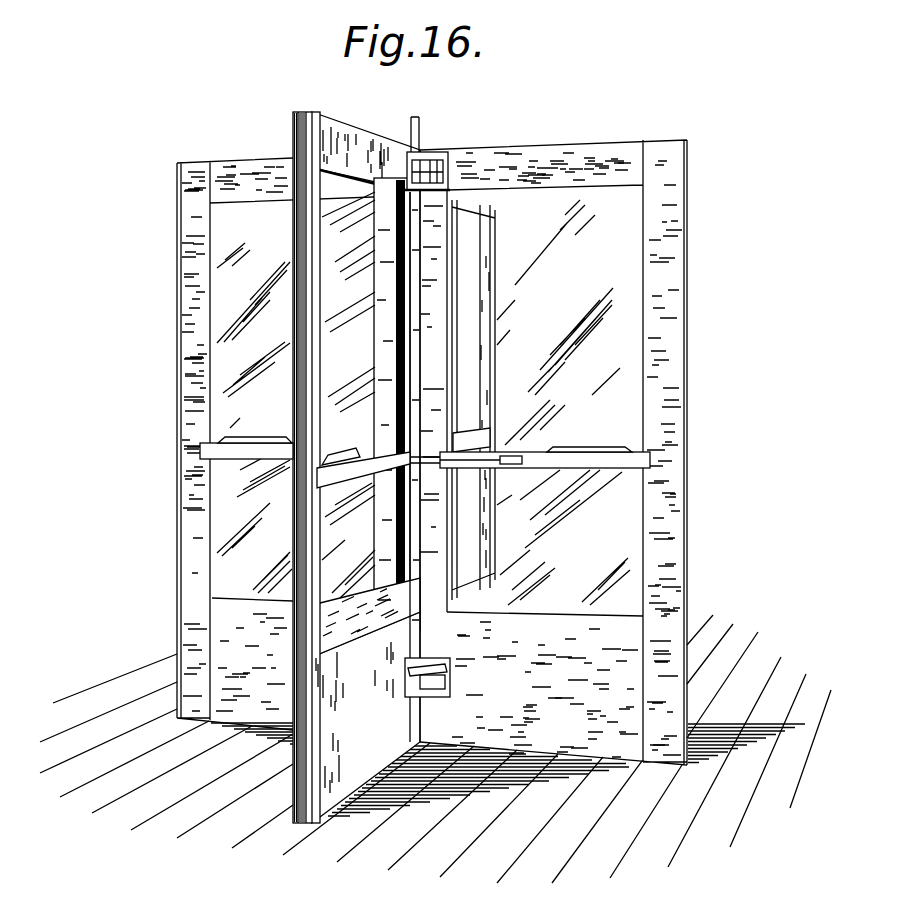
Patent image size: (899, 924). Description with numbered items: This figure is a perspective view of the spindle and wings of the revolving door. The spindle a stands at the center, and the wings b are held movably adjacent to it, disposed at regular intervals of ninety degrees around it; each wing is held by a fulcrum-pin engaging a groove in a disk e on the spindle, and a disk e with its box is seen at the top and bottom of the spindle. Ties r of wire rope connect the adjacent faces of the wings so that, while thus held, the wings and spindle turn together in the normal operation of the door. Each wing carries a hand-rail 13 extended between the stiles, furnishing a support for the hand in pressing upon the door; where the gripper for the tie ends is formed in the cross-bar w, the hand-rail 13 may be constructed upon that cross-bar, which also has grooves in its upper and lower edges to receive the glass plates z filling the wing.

The spindle a is at (420, 118).
The wings b is at (298, 112).
The disk e is at (448, 176).
The hand-rail 13 is at (247, 437).
The ties r is at (430, 452).
The cross-bar w is at (525, 464).
The glass plates z is at (563, 402).